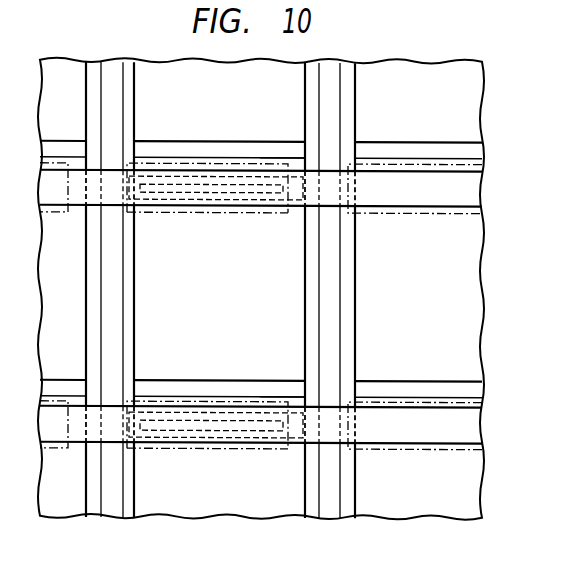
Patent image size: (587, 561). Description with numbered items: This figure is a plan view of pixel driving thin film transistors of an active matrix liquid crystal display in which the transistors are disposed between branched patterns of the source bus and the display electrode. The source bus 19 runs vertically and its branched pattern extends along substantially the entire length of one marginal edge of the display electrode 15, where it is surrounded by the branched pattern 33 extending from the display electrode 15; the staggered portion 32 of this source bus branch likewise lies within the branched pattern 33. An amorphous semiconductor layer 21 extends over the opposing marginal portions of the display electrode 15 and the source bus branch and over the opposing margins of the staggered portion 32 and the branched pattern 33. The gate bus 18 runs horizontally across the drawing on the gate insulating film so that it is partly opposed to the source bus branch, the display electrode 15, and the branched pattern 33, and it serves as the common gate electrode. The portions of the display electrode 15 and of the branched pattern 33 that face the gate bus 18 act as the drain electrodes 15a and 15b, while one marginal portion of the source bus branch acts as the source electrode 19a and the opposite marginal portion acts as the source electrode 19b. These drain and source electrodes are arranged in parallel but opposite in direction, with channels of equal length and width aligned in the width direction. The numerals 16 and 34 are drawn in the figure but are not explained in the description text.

The display electrode 15 is at (298, 327).
The drain electrode 15a is at (157, 207).
The drain electrode 15b is at (156, 176).
The source bus line 16 is at (267, 207).
The gate bus 18 is at (76, 206).
The source bus 19 is at (107, 112).
The source electrode 19a is at (183, 207).
The source electrode 19b is at (193, 163).
The amorphous semiconductor layer 21 is at (243, 207).
The staggered portion 32 is at (218, 207).
The branched pattern 33 is at (235, 157).
The contact hole 34 is at (280, 157).